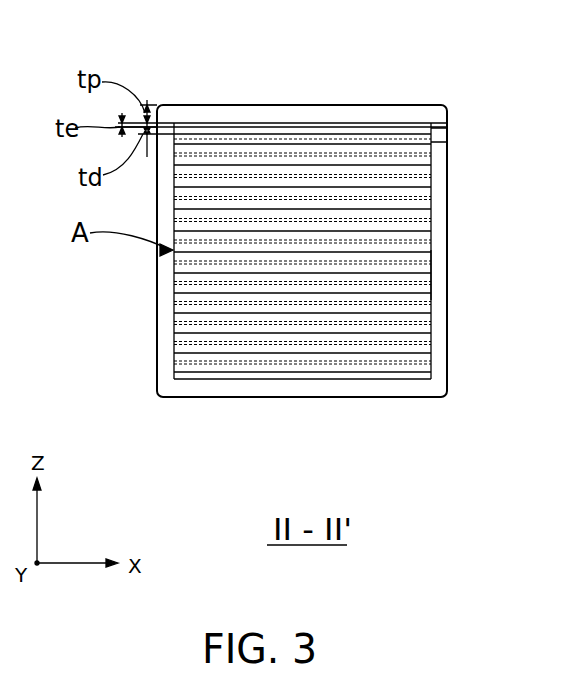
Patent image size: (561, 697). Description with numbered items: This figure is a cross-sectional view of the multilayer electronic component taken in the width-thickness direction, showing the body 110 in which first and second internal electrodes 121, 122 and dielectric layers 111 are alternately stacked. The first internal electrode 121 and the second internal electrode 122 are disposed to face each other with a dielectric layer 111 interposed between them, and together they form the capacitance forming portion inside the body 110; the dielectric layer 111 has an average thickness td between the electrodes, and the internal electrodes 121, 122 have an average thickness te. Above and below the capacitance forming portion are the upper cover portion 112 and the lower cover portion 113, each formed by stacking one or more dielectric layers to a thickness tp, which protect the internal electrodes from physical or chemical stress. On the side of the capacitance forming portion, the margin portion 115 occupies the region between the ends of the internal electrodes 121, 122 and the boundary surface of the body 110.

The body 110 is at (292, 110).
The dielectric layer 111 is at (432, 128).
The upper cover portion 112 is at (224, 113).
The lower cover portion 113 is at (292, 387).
The margin portion 115 is at (440, 270).
The first internal electrode 121 is at (343, 123).
The second internal electrode 122 is at (392, 134).